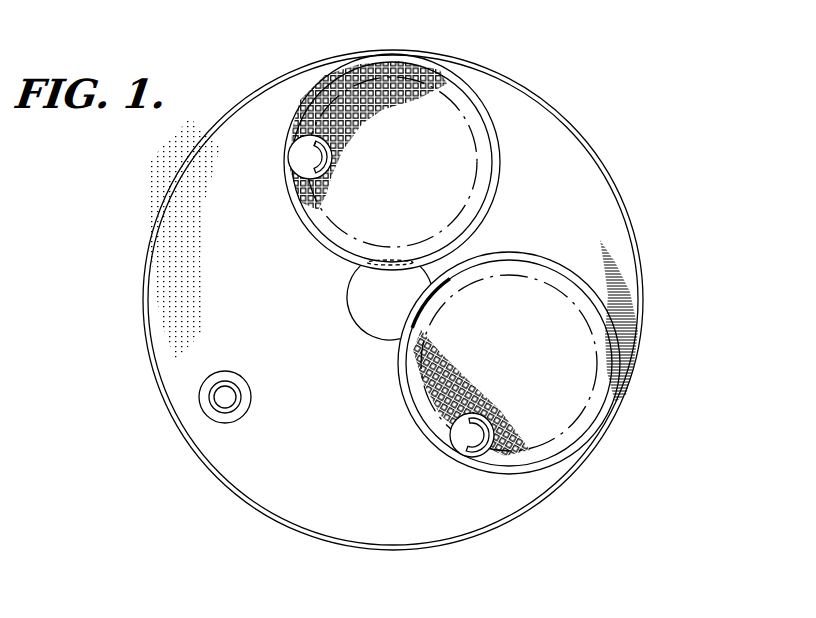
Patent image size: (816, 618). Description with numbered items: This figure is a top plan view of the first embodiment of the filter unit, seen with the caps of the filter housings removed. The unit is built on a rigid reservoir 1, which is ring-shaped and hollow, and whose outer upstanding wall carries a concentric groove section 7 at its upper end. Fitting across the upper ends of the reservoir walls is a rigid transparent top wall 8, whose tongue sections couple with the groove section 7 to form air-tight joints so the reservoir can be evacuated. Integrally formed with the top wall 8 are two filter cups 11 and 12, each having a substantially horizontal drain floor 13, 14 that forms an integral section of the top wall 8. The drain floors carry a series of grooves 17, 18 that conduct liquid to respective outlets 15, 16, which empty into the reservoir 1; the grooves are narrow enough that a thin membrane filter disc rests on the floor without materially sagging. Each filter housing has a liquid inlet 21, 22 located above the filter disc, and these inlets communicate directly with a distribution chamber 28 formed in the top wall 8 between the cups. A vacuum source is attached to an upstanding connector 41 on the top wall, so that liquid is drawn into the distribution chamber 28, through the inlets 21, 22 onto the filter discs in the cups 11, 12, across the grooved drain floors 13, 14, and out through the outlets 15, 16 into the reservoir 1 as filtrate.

The rigid reservoir 1 is at (650, 262).
The groove section 7 is at (160, 352).
The rigid transparent top wall 8 is at (190, 240).
The filter cup 11 is at (463, 82).
The filter cup 12 is at (616, 351).
The drain floor 13 is at (486, 142).
The drain floor 14 is at (597, 404).
The outlet 15 is at (324, 164).
The outlet 16 is at (483, 431).
The grooves 17 is at (380, 89).
The grooves 18 is at (448, 398).
The liquid inlet 21 is at (392, 261).
The liquid inlet 22 is at (418, 309).
The distribution chamber 28 is at (372, 324).
The upstanding connector 41 is at (212, 401).